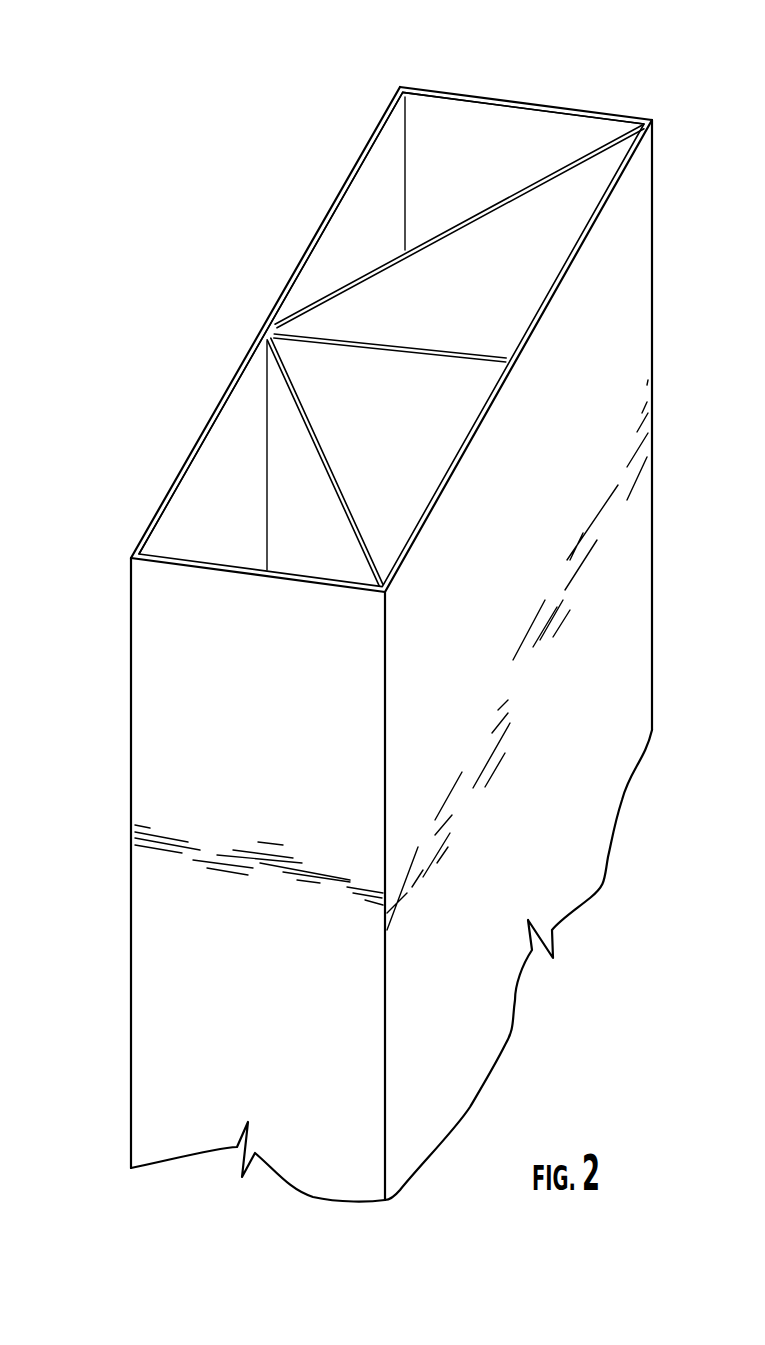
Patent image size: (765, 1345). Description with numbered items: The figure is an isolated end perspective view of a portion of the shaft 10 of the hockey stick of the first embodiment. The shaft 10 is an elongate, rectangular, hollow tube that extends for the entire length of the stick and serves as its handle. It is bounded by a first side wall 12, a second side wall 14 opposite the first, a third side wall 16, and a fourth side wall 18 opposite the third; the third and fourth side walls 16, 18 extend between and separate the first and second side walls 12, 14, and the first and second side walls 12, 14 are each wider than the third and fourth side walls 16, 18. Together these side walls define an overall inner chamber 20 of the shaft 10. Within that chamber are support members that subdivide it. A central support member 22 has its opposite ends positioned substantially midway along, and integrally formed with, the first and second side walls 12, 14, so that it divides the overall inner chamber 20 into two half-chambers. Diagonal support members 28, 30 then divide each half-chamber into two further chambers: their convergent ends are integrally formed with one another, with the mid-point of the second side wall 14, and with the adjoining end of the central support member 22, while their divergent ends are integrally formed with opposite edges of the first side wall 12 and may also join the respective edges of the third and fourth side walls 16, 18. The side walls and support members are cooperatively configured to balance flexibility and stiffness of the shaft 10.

The shaft 10 is at (97, 320).
The first side wall 12 is at (488, 639).
The second side wall 14 is at (325, 213).
The third side wall 16 is at (262, 928).
The fourth side wall 18 is at (522, 100).
The overall inner chamber 20 is at (491, 152).
The central support member 22 is at (448, 352).
The diagonal support member 28 is at (565, 150).
The diagonal support member 30 is at (372, 517).